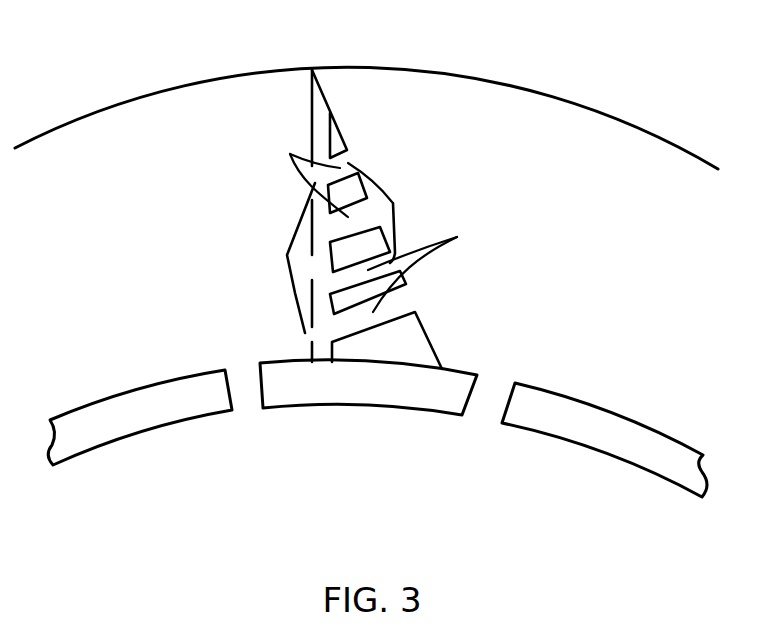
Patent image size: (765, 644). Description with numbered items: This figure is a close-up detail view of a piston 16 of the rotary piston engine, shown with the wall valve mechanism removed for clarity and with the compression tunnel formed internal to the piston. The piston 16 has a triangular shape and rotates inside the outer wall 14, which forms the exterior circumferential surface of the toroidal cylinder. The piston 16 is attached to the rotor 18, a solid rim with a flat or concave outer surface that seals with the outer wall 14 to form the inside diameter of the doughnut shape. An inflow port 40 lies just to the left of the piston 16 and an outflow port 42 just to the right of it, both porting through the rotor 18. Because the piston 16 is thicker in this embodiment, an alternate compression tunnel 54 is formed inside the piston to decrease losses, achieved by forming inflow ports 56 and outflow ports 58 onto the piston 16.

The outer wall 14 is at (483, 80).
The piston 16 is at (310, 132).
The rotor 18 is at (558, 405).
The inflow port 40 is at (243, 408).
The outflow port 42 is at (477, 415).
The alternate compression tunnel 54 is at (373, 228).
The inflow port 56 is at (312, 268).
The outflow port 58 is at (365, 213).